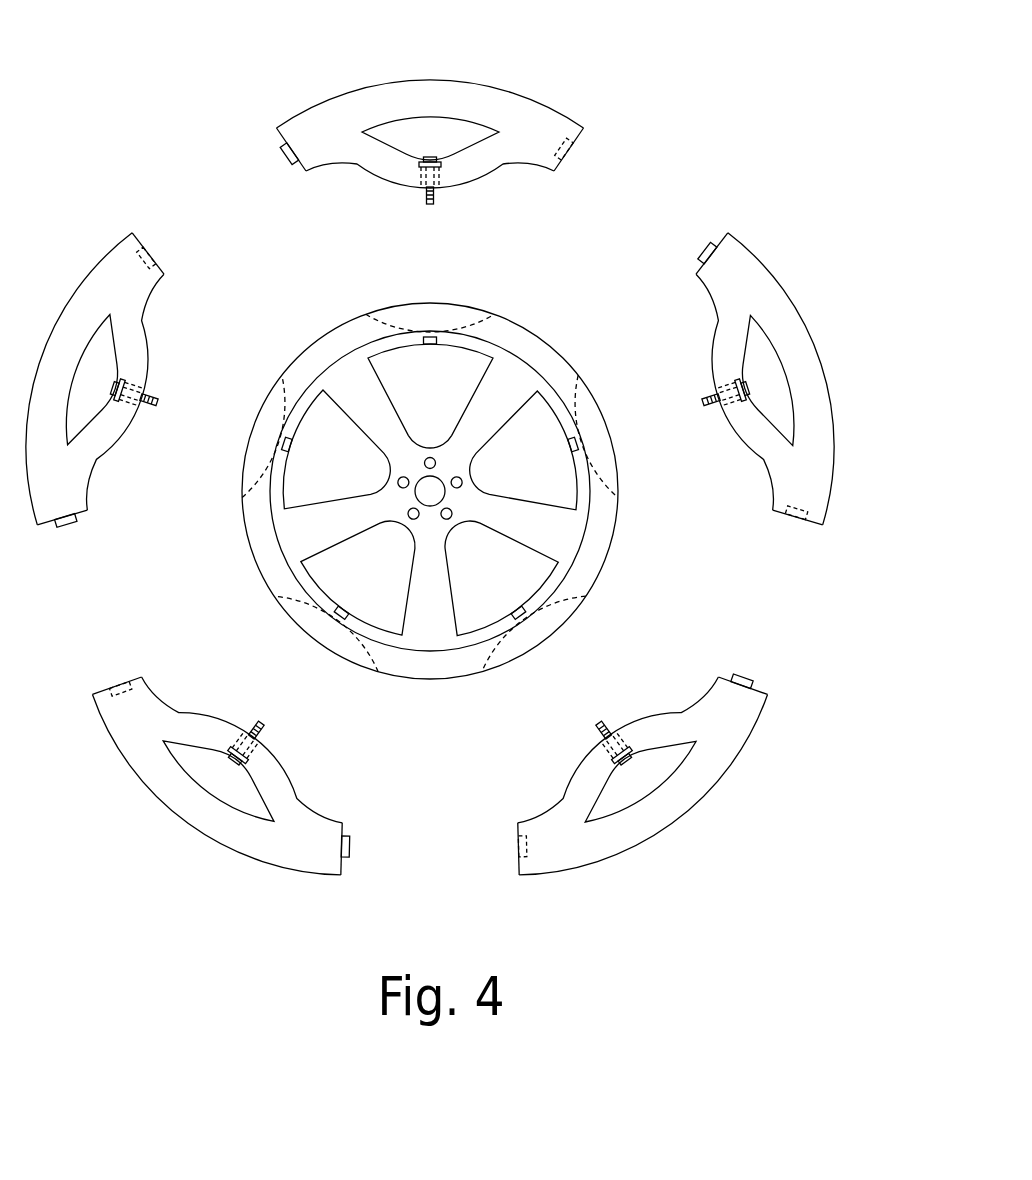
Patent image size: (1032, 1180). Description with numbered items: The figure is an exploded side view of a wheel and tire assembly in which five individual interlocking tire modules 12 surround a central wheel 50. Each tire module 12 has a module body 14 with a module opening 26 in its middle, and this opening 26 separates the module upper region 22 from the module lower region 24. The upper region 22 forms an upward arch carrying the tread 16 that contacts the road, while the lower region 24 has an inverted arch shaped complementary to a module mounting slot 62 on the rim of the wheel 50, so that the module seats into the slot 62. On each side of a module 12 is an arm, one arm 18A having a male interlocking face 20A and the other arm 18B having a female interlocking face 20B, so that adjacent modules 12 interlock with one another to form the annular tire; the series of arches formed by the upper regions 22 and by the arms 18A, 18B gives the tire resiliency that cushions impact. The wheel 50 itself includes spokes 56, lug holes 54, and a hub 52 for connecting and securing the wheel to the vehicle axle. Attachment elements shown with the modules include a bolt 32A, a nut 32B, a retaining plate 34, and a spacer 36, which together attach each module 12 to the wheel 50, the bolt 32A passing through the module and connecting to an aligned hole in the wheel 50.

The tire module 12 is at (427, 111).
The module body 14 is at (764, 383).
The tread 16 is at (313, 107).
The arm 18A is at (707, 292).
The arm 18B is at (773, 498).
The male interlocking face 20A is at (758, 692).
The female interlocking face 20B is at (513, 850).
The module upper region 22 is at (487, 102).
The module lower region 24 is at (460, 173).
The module opening 26 is at (220, 780).
The bolt 32A is at (238, 758).
The nut 32B is at (340, 615).
The retaining plate 34 is at (230, 750).
The spacer 36 is at (250, 750).
The wheel 50 is at (595, 553).
The hub 52 is at (445, 478).
The lug holes 54 is at (415, 510).
The spokes 56 is at (480, 412).
The module mounting slot 62 is at (405, 327).